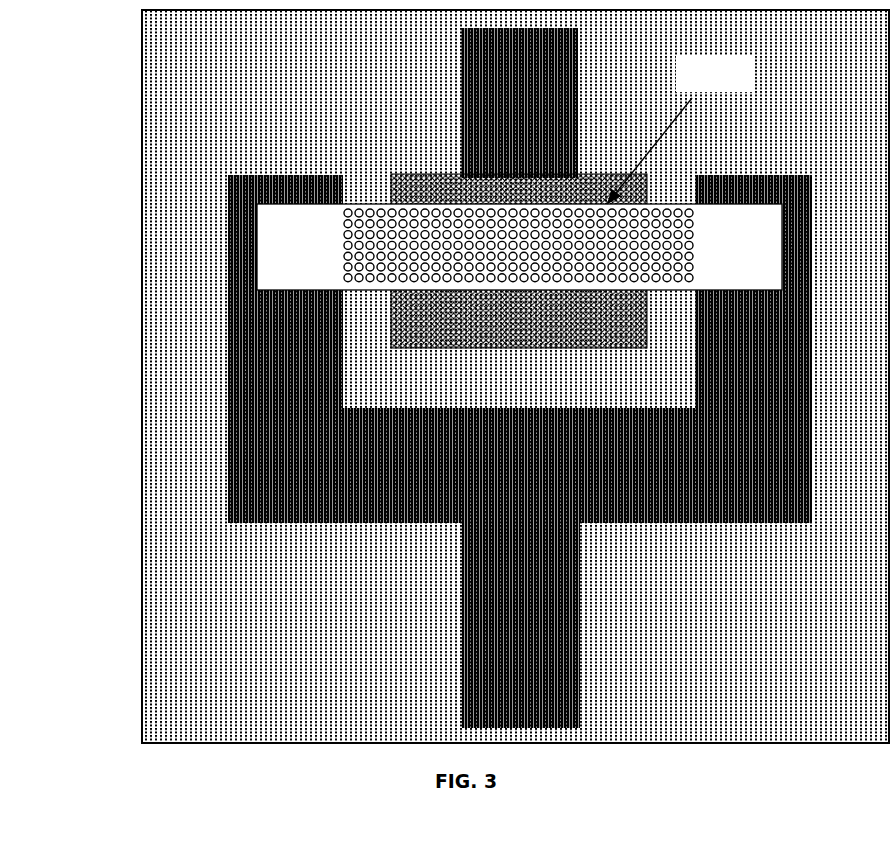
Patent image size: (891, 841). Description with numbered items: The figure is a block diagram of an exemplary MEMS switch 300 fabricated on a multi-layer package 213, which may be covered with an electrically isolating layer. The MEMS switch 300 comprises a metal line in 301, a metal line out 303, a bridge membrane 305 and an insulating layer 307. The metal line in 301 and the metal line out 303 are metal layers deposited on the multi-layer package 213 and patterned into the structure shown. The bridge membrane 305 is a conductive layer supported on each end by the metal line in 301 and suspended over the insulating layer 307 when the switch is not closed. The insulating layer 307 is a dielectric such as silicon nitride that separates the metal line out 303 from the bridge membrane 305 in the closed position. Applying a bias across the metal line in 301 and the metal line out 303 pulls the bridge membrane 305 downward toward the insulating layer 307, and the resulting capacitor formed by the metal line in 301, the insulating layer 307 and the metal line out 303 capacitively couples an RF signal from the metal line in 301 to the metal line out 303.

The MEMS switch 300 is at (467, 376).
The multi-layer package 213 is at (515, 376).
The metal line in 301 is at (520, 451).
The metal line out 303 is at (519, 103).
The bridge membrane 305 is at (519, 172).
The insulating layer 307 is at (519, 261).